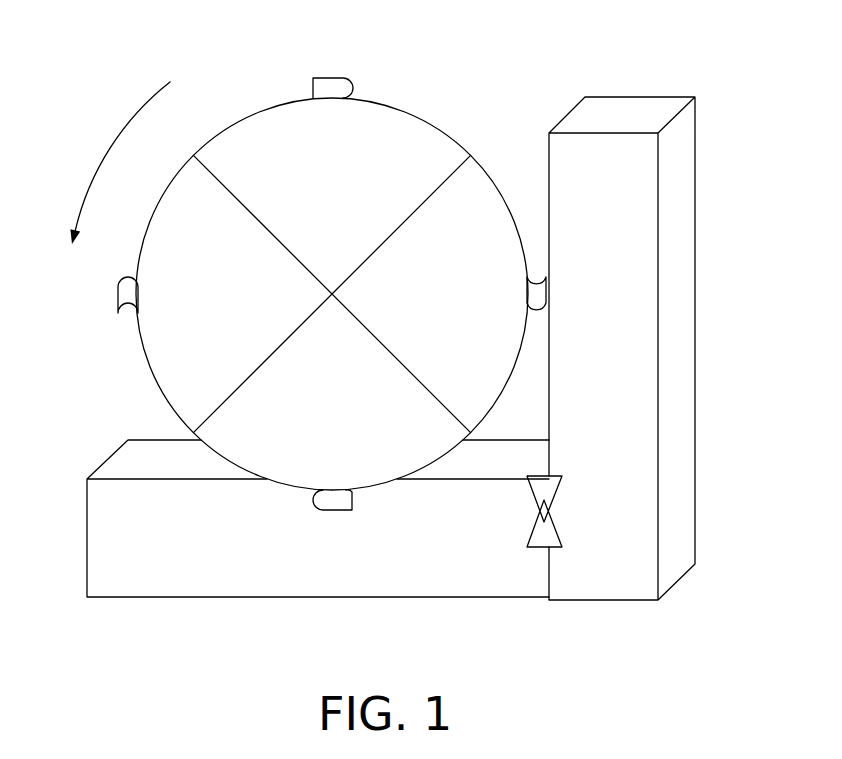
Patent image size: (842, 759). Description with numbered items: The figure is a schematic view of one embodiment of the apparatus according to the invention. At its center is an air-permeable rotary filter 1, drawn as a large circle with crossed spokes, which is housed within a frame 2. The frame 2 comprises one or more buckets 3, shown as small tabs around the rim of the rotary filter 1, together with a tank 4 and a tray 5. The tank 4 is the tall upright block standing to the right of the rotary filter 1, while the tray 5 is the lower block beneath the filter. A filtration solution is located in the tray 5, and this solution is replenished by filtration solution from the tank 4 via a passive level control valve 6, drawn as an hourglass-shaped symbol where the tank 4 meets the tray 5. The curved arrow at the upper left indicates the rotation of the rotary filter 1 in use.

The air-permeable rotary filter 1 is at (413, 142).
The frame 2 is at (252, 115).
The buckets 3 is at (323, 80).
The tank 4 is at (697, 347).
The tray 5 is at (290, 597).
The passive level control valve 6 is at (543, 548).